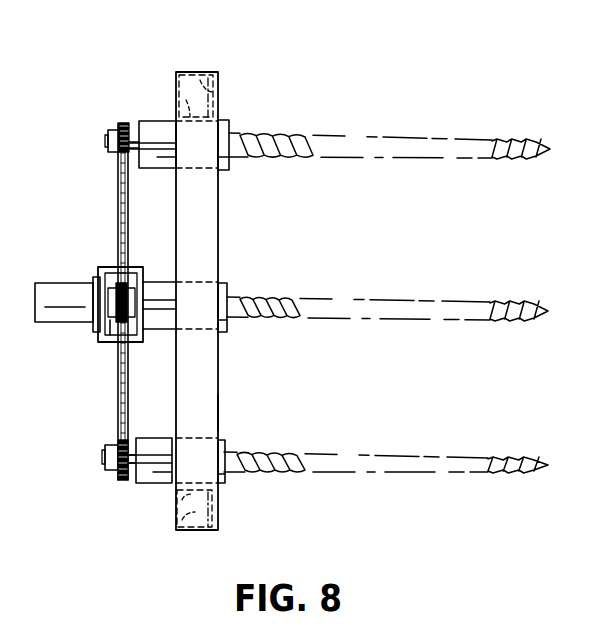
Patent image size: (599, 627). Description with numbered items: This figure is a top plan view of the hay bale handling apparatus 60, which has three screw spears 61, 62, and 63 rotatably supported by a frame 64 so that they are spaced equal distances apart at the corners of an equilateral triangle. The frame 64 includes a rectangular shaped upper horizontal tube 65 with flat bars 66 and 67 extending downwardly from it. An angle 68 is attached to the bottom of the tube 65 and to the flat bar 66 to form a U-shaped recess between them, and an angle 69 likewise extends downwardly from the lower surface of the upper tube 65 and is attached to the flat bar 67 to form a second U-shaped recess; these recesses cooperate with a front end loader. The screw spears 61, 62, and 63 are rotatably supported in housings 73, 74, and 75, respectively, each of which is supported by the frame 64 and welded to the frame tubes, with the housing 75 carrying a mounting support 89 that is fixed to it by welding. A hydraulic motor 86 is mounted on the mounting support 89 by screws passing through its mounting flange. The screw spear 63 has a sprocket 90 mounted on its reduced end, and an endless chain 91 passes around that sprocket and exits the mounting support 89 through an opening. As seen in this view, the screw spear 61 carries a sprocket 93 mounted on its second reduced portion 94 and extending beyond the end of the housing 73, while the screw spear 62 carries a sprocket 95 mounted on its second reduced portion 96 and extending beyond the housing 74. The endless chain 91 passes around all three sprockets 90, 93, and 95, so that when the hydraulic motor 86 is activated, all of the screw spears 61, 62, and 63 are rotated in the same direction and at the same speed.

The hay bale handling apparatus 60 is at (194, 299).
The screw spear 61 is at (284, 134).
The screw spear 62 is at (277, 453).
The screw spear 63 is at (280, 297).
The frame 64 is at (218, 413).
The upper horizontal tube 65 is at (212, 232).
The flat bar 66 is at (222, 85).
The flat bar 67 is at (158, 533).
The angle 68 is at (188, 100).
The angle 69 is at (168, 506).
The housing 73 is at (226, 172).
The housing 74 is at (222, 485).
The housing 75 is at (222, 332).
The hydraulic motor 86 is at (65, 282).
The mounting support 89 is at (105, 263).
The sprocket 90 is at (117, 322).
The endless chain 91 is at (118, 390).
The sprocket 93 is at (120, 123).
The second reduced portion 94 is at (108, 142).
The sprocket 95 is at (120, 480).
The second reduced portion 96 is at (107, 454).